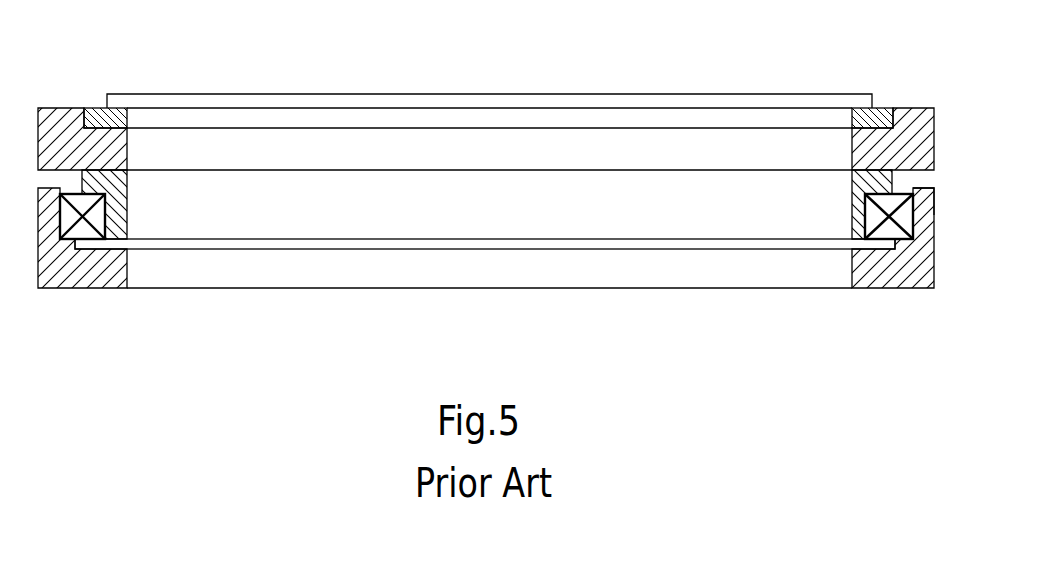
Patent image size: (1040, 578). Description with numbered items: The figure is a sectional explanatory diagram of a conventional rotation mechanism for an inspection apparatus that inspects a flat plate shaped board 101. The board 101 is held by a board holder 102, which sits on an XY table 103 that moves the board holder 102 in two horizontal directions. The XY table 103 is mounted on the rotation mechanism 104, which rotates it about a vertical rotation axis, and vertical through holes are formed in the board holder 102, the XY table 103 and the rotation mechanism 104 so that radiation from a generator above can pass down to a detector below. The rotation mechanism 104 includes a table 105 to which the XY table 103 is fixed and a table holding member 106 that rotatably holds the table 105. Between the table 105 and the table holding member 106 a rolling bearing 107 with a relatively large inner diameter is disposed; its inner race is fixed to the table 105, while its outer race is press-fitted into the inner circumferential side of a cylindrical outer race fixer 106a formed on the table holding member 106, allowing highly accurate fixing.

The board 101 is at (522, 93).
The board holder 102 is at (92, 108).
The XY table 103 is at (907, 108).
The rotation mechanism 104 is at (912, 288).
The table 105 is at (116, 249).
The table holding member 106 is at (45, 288).
The outer race fixer 106a is at (934, 186).
The rolling bearing 107 is at (885, 249).